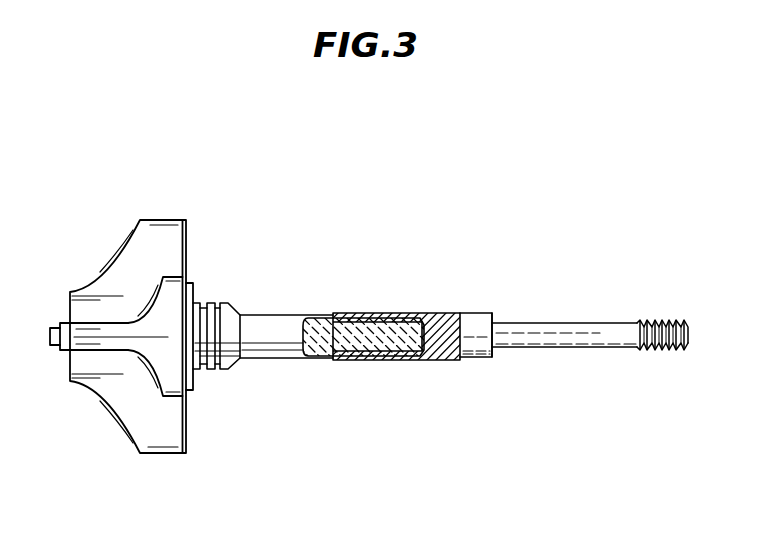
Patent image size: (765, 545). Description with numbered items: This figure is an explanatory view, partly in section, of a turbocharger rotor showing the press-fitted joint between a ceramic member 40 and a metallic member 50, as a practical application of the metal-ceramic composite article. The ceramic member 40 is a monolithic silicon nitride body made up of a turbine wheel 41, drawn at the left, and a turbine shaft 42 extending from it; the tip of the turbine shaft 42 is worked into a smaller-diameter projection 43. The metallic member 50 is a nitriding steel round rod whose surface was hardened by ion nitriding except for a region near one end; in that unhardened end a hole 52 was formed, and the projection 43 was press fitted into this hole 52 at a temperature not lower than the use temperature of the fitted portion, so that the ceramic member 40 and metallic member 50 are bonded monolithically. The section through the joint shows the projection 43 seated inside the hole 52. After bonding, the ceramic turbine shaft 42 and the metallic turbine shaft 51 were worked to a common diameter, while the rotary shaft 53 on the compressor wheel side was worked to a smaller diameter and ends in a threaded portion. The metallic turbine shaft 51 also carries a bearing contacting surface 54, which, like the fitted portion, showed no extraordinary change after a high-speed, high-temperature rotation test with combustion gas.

The ceramic member 40 is at (180, 195).
The turbine wheel 41 is at (165, 438).
The turbine shaft 42 is at (268, 345).
The projection 43 is at (380, 340).
The metallic member 50 is at (593, 399).
The metallic turbine shaft 51 is at (484, 338).
The hole 52 is at (399, 314).
The rotary shaft 53 is at (607, 323).
The bearing contacting surface 54 is at (491, 313).